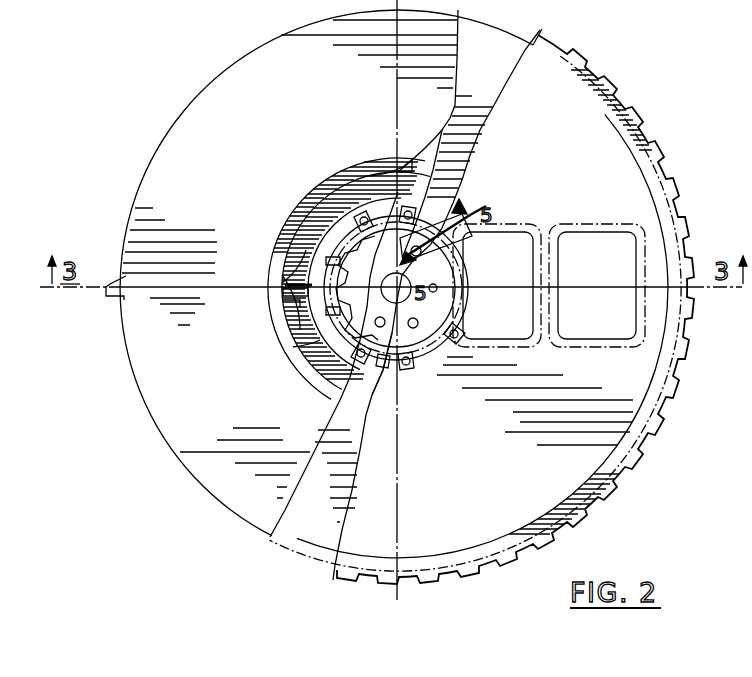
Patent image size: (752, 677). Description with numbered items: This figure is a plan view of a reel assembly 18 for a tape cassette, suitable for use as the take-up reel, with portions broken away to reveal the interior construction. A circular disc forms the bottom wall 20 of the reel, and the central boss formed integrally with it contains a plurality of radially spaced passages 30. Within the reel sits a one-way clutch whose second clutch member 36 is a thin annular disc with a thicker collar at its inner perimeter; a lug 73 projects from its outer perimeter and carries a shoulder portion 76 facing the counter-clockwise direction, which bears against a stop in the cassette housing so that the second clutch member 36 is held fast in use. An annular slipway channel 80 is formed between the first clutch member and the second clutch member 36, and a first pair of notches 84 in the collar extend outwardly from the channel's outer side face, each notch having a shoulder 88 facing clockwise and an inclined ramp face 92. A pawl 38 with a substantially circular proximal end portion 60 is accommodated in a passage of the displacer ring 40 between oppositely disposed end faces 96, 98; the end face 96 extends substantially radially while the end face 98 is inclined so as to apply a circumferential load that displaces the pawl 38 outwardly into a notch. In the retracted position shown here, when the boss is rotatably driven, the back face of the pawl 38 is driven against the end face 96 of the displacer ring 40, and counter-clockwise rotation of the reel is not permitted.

The reel assembly 18 is at (613, 52).
The bottom wall 20 is at (305, 555).
The passages 30 is at (358, 383).
The second clutch member 36 is at (208, 491).
The pawl 38 is at (267, 282).
The displacer ring 40 is at (315, 215).
The proximal end portion 60 is at (293, 320).
The lug 73 is at (113, 287).
The shoulder portion 76 is at (115, 297).
The slipway channel 80 is at (305, 377).
The first pair of notches 84 is at (277, 298).
The shoulder 88 is at (268, 315).
The inclined ramp face 92 is at (280, 283).
The end face 96 is at (282, 275).
The end face 98 is at (293, 347).